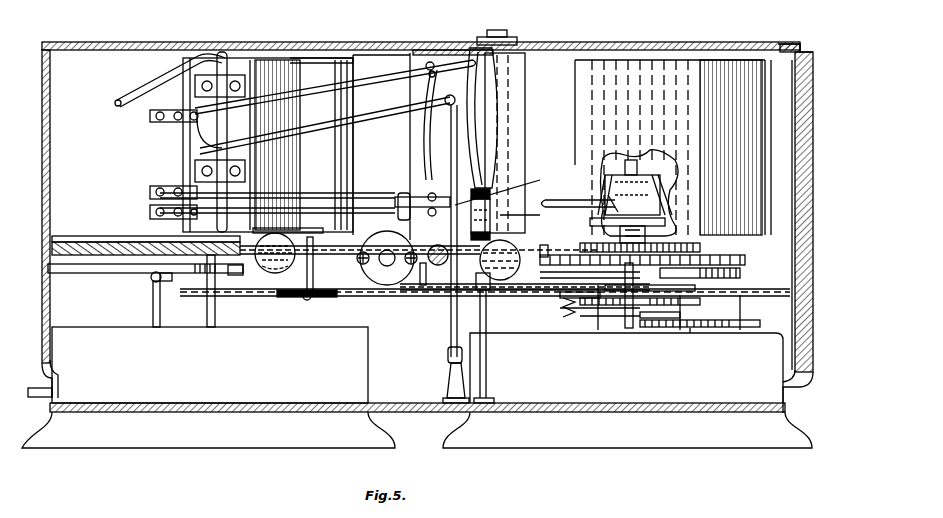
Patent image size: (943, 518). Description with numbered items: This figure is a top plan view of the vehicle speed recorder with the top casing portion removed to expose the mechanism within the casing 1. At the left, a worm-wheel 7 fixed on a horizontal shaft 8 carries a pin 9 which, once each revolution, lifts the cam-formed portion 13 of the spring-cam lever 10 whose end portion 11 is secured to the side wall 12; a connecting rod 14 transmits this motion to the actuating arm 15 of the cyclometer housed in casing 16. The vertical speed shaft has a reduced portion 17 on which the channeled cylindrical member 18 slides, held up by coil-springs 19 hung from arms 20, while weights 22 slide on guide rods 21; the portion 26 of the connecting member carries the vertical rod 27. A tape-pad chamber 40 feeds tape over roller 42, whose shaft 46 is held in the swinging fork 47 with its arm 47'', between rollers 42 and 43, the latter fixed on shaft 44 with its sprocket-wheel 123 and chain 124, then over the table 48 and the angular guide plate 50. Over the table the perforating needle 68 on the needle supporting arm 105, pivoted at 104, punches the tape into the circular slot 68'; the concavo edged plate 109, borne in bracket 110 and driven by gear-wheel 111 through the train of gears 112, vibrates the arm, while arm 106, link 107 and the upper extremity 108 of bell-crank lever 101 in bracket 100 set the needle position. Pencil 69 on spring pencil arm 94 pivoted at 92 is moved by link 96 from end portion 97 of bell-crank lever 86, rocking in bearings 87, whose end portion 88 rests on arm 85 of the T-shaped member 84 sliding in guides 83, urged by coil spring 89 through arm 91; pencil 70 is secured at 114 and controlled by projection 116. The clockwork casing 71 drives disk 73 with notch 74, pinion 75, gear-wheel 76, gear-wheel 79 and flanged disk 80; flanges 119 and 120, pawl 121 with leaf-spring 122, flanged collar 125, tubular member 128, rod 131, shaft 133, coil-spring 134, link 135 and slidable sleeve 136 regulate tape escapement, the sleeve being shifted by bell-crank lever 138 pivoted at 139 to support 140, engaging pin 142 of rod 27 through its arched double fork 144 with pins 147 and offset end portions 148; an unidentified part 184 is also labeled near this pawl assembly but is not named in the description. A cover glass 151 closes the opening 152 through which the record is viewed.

The casing 1 is at (156, 42).
The worm-wheel 7 is at (106, 256).
The shaft 8 is at (215, 303).
The pin 9 is at (172, 280).
The spring-cam lever 10 is at (140, 273).
The end portion of lever 11 is at (50, 272).
The side wall 12 is at (48, 192).
The cam-formed portion 13 is at (236, 275).
The connecting rod 14 is at (163, 287).
The actuating arm 15 is at (156, 310).
The cyclometer casing 16 is at (210, 365).
The shaft portion 17 is at (375, 285).
The cylindrical member 18 is at (365, 268).
The coil-springs 19 is at (383, 250).
The arms 20 is at (515, 248).
The guide rods 21 is at (325, 255).
The weights 22 is at (272, 274).
The portion of connecting member 26 is at (490, 230).
The rod 27 is at (451, 290).
The tape-pad chamber 40 is at (75, 62).
The roller 42 is at (250, 62).
The roller 43 is at (320, 65).
The shaft 44 is at (336, 297).
The shaft 46 is at (128, 236).
The swinging fork 47 is at (191, 142).
The arm 47'' is at (161, 97).
The table 48 is at (520, 60).
The angular guide plate 50 is at (765, 235).
The perforating needle 68 is at (444, 94).
The circular slot 68' is at (418, 115).
The pencil 69 is at (480, 201).
The pencil 70 is at (436, 194).
The clockwork casing 71 is at (626, 368).
The circular disk 73 is at (730, 322).
The tapering notch 74 is at (692, 328).
The pinion 75 is at (650, 328).
The gear-wheel 76 is at (720, 328).
The gear-wheel 79 is at (745, 265).
The flanged disk 80 is at (720, 292).
The guides 83 is at (628, 328).
The T-shaped member 84 is at (615, 328).
The arm 85 is at (658, 272).
The bell-crank lever 86 is at (512, 292).
The bearings 87 is at (486, 352).
The end portion 88 is at (645, 296).
The coil spring 89 is at (560, 325).
The arm 91 is at (560, 255).
The pivot 92 is at (185, 190).
The spring pencil arm 94 is at (375, 233).
The link 96 is at (432, 266).
The end portion 97 is at (409, 297).
The bracket 100 is at (449, 385).
The bell-crank lever 101 is at (447, 340).
The pivot 104 is at (186, 112).
The needle supporting arm 105 is at (372, 80).
The arm 106 is at (368, 125).
The link 107 is at (440, 152).
The upper extremity 108 is at (452, 300).
The concavo edged plate 109 is at (485, 170).
The bracket 110 is at (505, 190).
The gear-wheel 111 is at (492, 45).
The train of gears 112 is at (418, 50).
The securing point 114 is at (165, 205).
The projection 116 is at (398, 192).
The flange 119 is at (565, 302).
The flange 120 is at (695, 298).
The pawl 121 is at (690, 314).
The leaf-spring 122 is at (663, 328).
The sprocket-wheel 123 is at (305, 297).
The chain 124 is at (392, 290).
The flanged collar 125 is at (600, 236).
The tubular member 128 is at (650, 172).
The rod 131 is at (648, 240).
The shaft 133 is at (618, 265).
The coil-spring 134 is at (598, 216).
The link 135 is at (685, 252).
The slidable sleeve 136 is at (660, 190).
The bell-crank lever 138 is at (575, 198).
The pivot 139 is at (526, 213).
The support 140 is at (520, 128).
The pin 142 is at (404, 242).
The arched double fork 144 is at (605, 193).
The pins 147 is at (670, 212).
The offset end portions 148 is at (645, 165).
The cover glass 151 is at (808, 48).
The opening 152 is at (798, 150).
The stop 184 is at (600, 248).